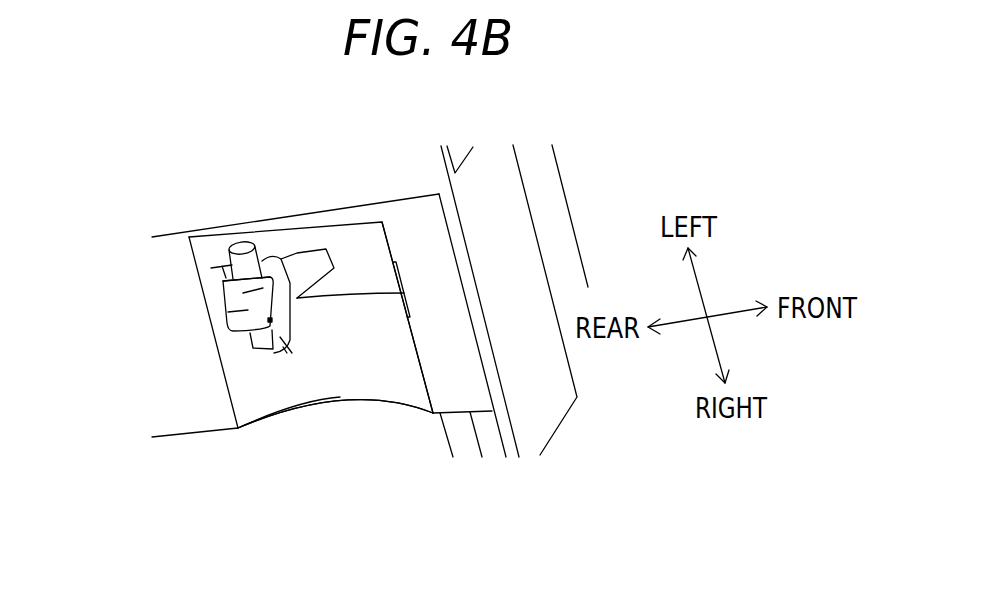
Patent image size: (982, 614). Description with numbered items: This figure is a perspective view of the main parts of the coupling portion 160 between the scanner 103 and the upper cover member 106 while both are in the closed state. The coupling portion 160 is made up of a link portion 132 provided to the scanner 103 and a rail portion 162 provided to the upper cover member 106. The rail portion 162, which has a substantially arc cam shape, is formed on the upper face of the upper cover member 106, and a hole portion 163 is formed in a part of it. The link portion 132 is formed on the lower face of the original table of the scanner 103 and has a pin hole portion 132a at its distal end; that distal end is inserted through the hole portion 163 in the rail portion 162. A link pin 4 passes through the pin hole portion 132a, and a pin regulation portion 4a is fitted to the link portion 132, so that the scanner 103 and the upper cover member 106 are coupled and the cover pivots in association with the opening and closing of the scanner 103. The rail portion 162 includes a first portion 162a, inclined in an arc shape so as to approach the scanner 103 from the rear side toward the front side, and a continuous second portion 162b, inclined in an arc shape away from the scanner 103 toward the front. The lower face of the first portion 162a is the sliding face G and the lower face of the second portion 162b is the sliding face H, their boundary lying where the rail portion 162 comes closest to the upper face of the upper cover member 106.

The scanner 103 is at (183, 191).
The face G is at (221, 255).
The link pin 4 is at (248, 265).
The pin regulation portion 4a is at (285, 349).
The rail portion 162 is at (293, 243).
The first portion 162a is at (273, 387).
The second portion 162b is at (383, 368).
The hole portion 163 is at (362, 277).
The face H is at (377, 237).
The link portion 132 is at (232, 315).
The pin hole portion 132a is at (227, 279).
The upper cover member 106 is at (197, 407).
The coupling portion 160 is at (325, 456).